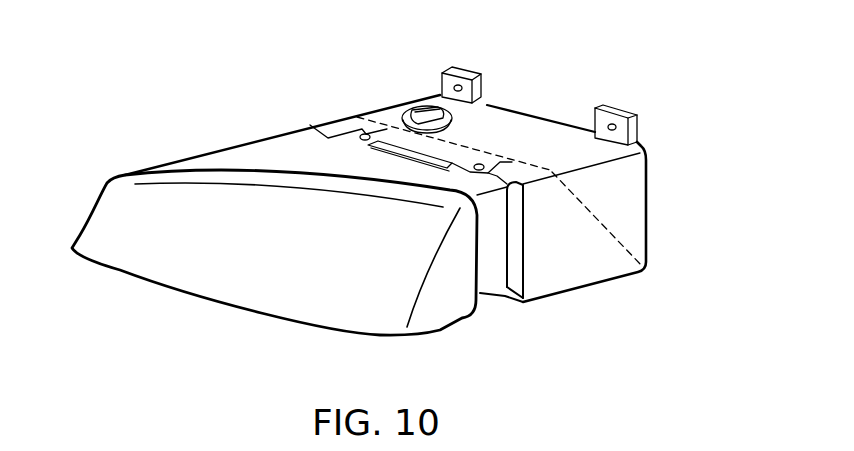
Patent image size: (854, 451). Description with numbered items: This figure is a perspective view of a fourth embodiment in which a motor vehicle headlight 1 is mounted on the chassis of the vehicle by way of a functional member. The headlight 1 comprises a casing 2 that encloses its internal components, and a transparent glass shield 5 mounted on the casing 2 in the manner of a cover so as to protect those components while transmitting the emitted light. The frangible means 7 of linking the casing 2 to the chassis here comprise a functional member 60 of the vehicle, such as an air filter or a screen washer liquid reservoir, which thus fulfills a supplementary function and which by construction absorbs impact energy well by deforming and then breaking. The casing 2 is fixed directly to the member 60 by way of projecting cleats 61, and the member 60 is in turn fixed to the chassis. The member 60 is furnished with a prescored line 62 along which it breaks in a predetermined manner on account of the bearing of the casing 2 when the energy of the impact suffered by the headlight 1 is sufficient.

The headlight 1 is at (182, 130).
The casing 2 is at (262, 152).
The transparent glass shield 5 is at (107, 228).
The frangible linking means 7 is at (610, 204).
The functional member 60 is at (621, 187).
The projecting cleats 61 is at (353, 140).
The prescored line 62 is at (470, 147).